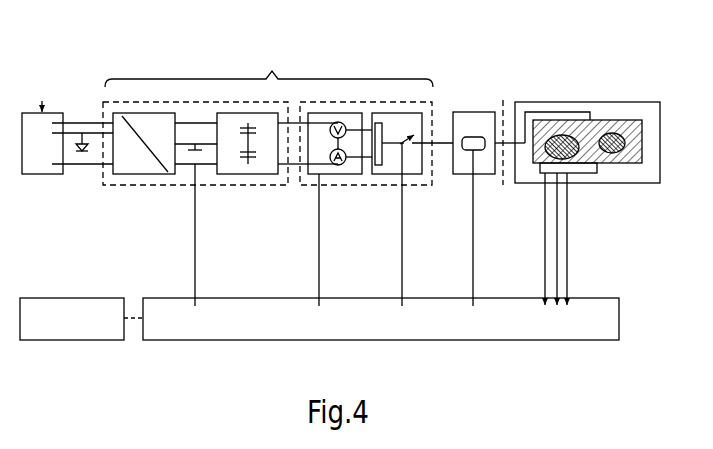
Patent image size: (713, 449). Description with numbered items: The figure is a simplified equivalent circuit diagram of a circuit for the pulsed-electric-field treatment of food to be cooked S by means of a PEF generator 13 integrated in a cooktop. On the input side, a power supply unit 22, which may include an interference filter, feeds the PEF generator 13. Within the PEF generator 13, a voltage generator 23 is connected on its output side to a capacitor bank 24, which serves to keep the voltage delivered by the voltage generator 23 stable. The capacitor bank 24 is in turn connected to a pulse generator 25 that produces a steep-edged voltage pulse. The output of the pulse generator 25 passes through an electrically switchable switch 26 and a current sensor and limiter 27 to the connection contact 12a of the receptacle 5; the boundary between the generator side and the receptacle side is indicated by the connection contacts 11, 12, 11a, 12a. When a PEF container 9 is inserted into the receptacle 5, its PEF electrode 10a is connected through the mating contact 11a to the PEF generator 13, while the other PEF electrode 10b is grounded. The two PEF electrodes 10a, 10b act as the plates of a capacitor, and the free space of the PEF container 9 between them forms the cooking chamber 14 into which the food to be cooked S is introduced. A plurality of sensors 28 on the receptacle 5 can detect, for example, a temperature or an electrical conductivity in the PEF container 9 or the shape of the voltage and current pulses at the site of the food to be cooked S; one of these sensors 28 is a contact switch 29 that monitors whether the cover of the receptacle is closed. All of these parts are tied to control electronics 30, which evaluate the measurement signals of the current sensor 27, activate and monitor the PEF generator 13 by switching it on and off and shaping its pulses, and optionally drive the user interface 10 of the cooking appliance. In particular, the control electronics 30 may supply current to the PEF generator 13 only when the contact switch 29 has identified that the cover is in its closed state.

The receptacle 5 is at (549, 102).
The PEF container 9 is at (597, 111).
The cooking chamber 14 is at (622, 120).
The user interface 10 is at (59, 298).
The PEF electrode 10a is at (592, 112).
The PEF electrode 10b is at (600, 173).
The supply line 11 is at (452, 107).
The supply line 12 is at (452, 107).
The mating contact 11a is at (452, 107).
The connection contact 12a is at (503, 100).
The PEF generator 13 is at (278, 175).
The power supply unit 22 is at (45, 176).
The voltage generator 23 is at (135, 182).
The capacitor bank 24 is at (230, 179).
The pulse generator 25 is at (345, 178).
The electrically switchable switch 26 is at (415, 180).
The current sensor and limiter 27 is at (481, 112).
The sensors 28 is at (536, 170).
The contact switch 29 is at (570, 165).
The control electronics 30 is at (619, 318).
The food to be cooked S is at (640, 146).